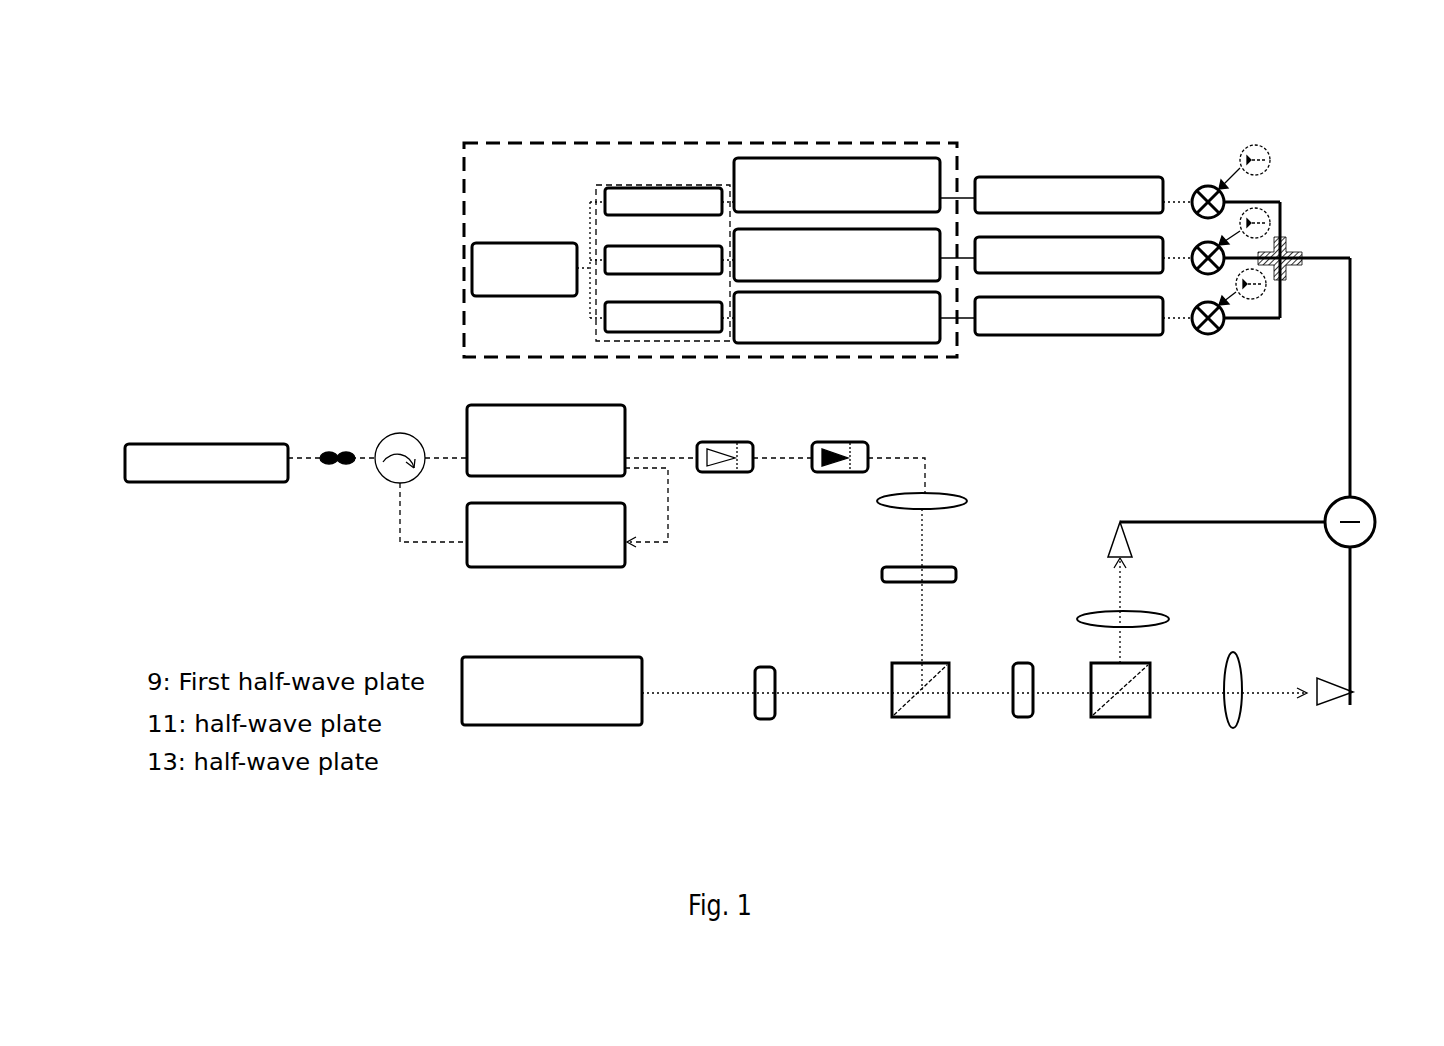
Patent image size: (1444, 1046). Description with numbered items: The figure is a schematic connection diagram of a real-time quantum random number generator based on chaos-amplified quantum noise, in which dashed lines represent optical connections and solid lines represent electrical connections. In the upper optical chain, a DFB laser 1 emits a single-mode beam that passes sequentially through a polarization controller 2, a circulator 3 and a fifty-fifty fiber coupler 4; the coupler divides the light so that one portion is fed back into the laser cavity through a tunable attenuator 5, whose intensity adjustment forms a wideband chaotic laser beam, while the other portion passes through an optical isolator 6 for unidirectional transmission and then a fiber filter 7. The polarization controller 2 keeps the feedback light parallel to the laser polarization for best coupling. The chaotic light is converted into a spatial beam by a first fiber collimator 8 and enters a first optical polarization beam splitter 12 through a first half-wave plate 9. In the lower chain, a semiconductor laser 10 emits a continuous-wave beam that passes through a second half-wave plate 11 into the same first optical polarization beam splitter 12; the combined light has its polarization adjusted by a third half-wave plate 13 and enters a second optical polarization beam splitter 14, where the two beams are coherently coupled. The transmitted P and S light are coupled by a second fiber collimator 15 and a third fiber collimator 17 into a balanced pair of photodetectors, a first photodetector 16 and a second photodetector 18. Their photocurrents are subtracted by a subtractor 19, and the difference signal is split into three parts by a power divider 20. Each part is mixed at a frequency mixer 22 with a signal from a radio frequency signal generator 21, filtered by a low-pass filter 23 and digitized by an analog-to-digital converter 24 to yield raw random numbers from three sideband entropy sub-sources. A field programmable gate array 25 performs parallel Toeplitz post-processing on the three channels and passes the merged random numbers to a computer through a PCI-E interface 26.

The DFB laser 1 is at (153, 443).
The polarization controller 2 is at (335, 450).
The circulator 3 is at (402, 433).
The 50/50 fiber coupler 4 is at (488, 405).
The tunable attenuator 5 is at (493, 567).
The optical isolator 6 is at (727, 442).
The fiber filter 7 is at (840, 442).
The first fiber collimator 8 is at (880, 503).
The first half-wave plate 9 is at (933, 582).
The semiconductor laser 10 is at (473, 737).
The second half-wave plate 11 is at (767, 725).
The first optical polarization beam splitter 12 is at (920, 727).
The third half-wave plate 13 is at (1023, 725).
The second optical polarization beam splitter 14 is at (1127, 725).
The second fiber collimator 15 is at (1228, 727).
The first photodetector 16 is at (1332, 717).
The third fiber collimator 17 is at (1170, 617).
The second photodetector 18 is at (1120, 522).
The subtractor 19 is at (1358, 545).
The power divider 20 is at (1290, 245).
The radio frequency signal generator 21 is at (1272, 142).
The frequency mixer 22 is at (1207, 187).
The low-pass filter 23 is at (1150, 180).
The analog-to-digital converter 24 is at (829, 155).
The field programmable gate array 25 is at (664, 178).
The PCI-E interface 26 is at (510, 242).